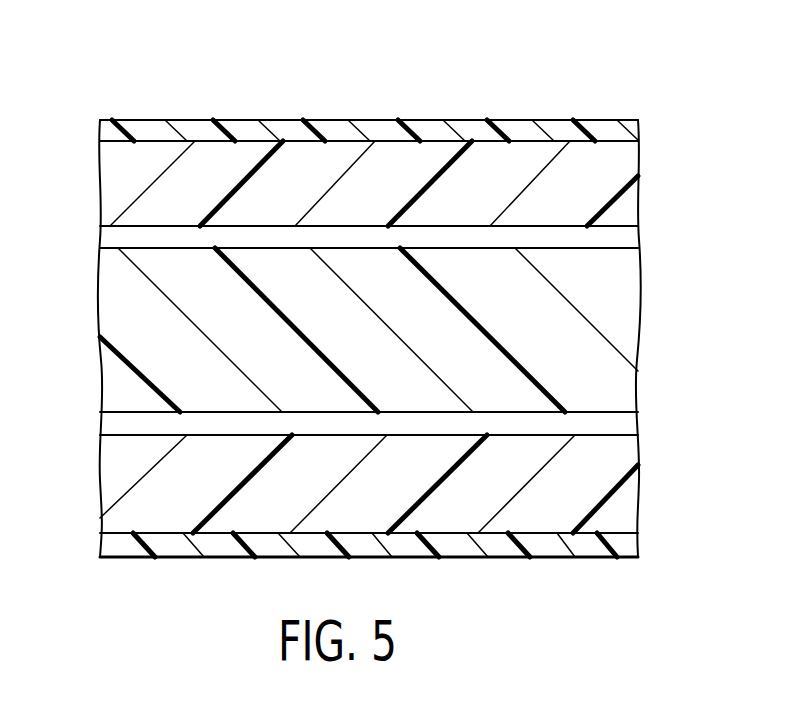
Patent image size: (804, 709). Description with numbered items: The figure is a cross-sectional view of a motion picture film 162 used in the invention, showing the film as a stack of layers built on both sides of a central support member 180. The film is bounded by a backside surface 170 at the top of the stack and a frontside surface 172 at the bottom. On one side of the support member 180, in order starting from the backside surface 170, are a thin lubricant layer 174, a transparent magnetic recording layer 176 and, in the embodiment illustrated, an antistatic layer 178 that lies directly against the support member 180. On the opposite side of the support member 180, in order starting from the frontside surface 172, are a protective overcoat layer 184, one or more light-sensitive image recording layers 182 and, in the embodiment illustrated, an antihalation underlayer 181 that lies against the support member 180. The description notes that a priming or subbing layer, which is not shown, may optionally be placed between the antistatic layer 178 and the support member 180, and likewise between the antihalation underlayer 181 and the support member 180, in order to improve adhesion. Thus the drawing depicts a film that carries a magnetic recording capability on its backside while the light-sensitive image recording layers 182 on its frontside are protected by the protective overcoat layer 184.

The motion picture film 162 is at (148, 106).
The backside surface 170 is at (596, 114).
The frontside surface 172 is at (562, 557).
The thin lubricant layer 174 is at (632, 127).
The transparent magnetic recording layer 176 is at (632, 193).
The antistatic layer 178 is at (632, 232).
The support member 180 is at (636, 312).
The antihalation underlayer 181 is at (636, 422).
The light-sensitive image recording layer 182 is at (636, 488).
The protective overcoat layer 184 is at (632, 543).